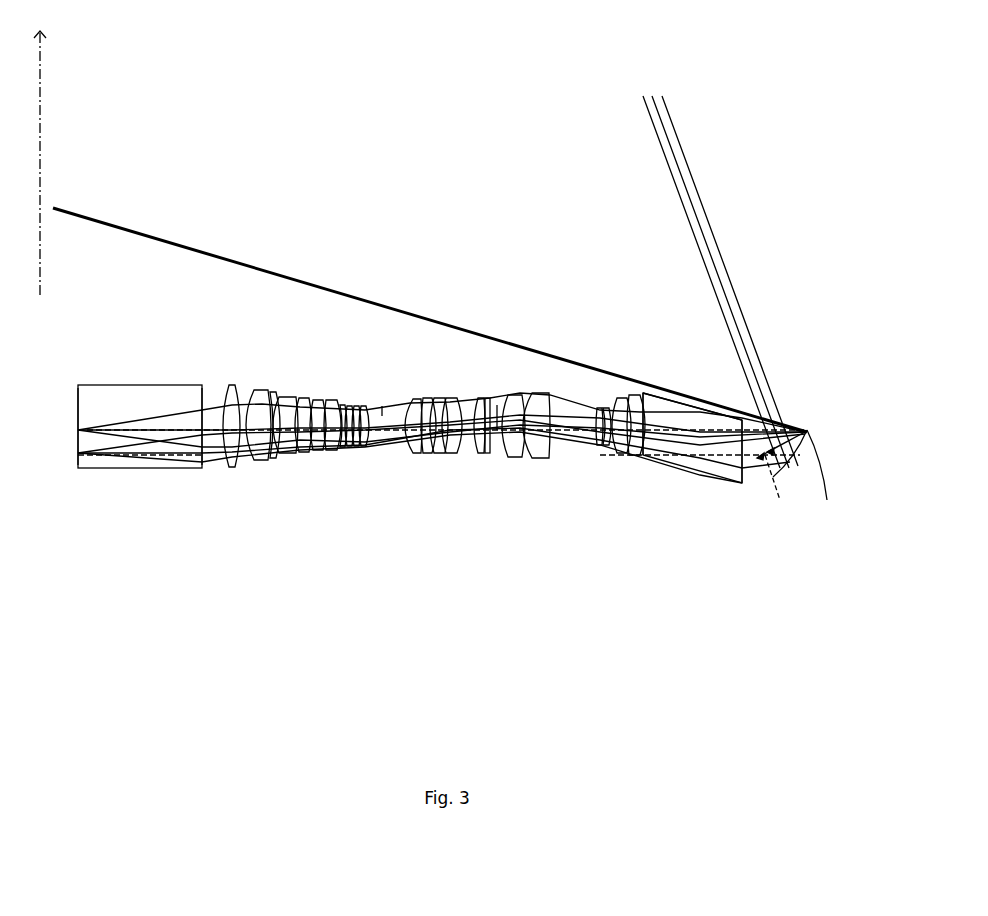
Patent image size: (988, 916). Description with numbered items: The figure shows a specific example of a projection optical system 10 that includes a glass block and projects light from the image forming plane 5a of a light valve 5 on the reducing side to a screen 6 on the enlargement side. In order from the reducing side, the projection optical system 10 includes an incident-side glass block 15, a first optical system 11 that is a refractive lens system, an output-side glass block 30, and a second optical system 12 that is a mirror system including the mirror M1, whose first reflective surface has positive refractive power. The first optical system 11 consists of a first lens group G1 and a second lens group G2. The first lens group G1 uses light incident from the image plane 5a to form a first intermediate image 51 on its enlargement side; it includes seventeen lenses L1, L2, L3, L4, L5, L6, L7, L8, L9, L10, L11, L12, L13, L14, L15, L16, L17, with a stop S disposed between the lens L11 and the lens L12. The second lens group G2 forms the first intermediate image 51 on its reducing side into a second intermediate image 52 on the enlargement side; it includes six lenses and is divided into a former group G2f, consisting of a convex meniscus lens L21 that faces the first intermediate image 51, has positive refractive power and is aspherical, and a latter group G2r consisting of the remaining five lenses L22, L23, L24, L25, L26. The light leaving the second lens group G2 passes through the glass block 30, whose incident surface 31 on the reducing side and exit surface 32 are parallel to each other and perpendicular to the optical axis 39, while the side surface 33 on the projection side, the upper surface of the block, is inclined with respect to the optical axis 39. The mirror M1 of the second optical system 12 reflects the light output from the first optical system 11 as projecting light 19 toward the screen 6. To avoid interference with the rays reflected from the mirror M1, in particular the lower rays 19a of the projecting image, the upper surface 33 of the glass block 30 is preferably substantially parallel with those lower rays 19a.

The light valve 5 is at (78, 430).
The image forming plane 5a is at (80, 456).
The incident-side glass block 15 is at (133, 465).
The screen 6 is at (40, 255).
The projecting light 19 is at (678, 198).
The lower rays 19a is at (454, 325).
The projection optical system 10 is at (570, 686).
The first optical system 11 is at (313, 653).
The second optical system 12 is at (846, 530).
The glass block 30 is at (704, 482).
The incident surface 31 is at (643, 398).
The exit surface 32 is at (749, 486).
The upper surface 33 is at (717, 412).
The optical axis 39 is at (690, 406).
The first intermediate image 51 is at (497, 420).
The second intermediate image 52 is at (780, 502).
The first reflective surface M1 is at (811, 440).
The stop S is at (383, 415).
The first lens group G1 is at (162, 623).
The second lens group G2 is at (511, 622).
The former group G2f is at (511, 588).
The latter group G2r is at (680, 588).
The lens L1 is at (228, 468).
The lens L2 is at (252, 462).
The lens L3 is at (272, 460).
The lens L4 is at (280, 458).
The lens L5 is at (301, 455).
The lens L6 is at (314, 455).
The lens L7 is at (327, 455).
The lens L8 is at (341, 452).
The lens L9 is at (349, 450).
The lens L10 is at (356, 450).
The lens L11 is at (364, 450).
The lens L12 is at (417, 458).
The lens L13 is at (428, 458).
The lens L14 is at (439, 458).
The lens L15 is at (452, 458).
The lens L16 is at (481, 458).
The lens L17 is at (489, 458).
The convex meniscus lens L21 is at (518, 462).
The lens L22 is at (548, 462).
The lens L23 is at (599, 448).
The lens L24 is at (606, 448).
The lens L25 is at (622, 456).
The lens L26 is at (636, 458).